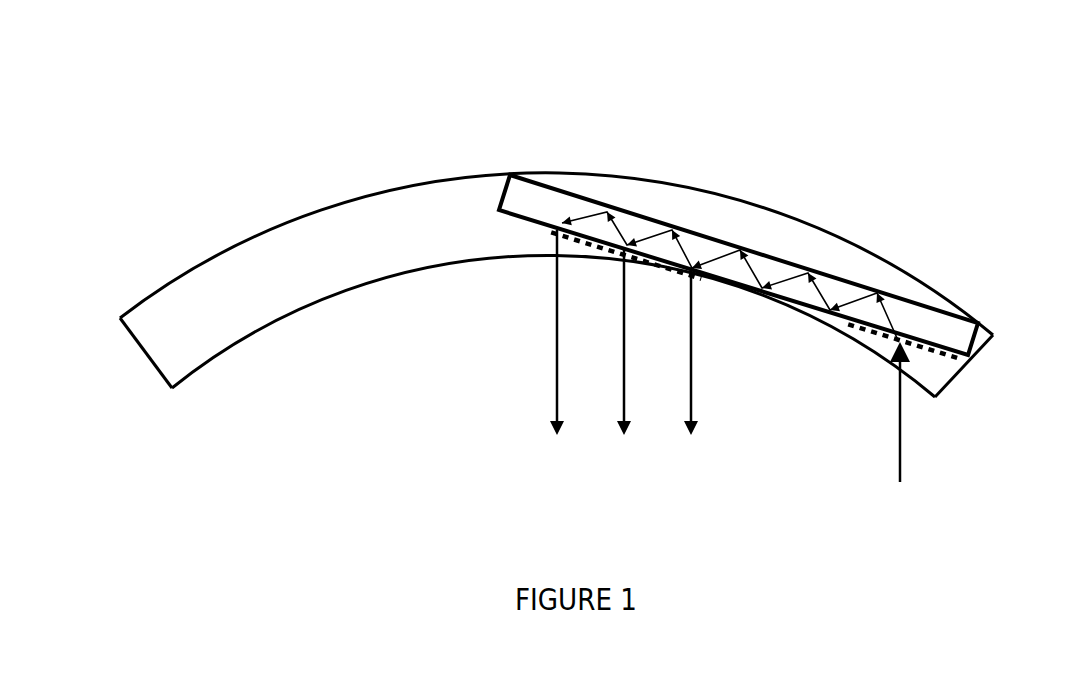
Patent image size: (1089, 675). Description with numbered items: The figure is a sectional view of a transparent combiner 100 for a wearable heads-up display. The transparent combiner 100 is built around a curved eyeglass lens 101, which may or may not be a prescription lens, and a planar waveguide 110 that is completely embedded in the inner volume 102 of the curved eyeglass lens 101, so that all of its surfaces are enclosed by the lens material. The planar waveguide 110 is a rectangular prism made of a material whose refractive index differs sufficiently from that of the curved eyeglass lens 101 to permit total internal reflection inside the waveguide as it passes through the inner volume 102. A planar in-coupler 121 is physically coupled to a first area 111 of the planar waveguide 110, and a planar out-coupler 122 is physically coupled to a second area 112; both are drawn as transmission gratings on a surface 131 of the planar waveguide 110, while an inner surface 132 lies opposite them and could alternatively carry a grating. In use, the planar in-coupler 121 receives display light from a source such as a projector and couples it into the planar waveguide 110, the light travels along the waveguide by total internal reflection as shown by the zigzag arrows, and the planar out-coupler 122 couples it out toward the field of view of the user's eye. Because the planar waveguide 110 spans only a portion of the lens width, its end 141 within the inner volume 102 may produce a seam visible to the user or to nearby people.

The transparent combiner 100 is at (136, 121).
The curved eyeglass lens 101 is at (137, 341).
The inner volume 102 is at (333, 257).
The planar waveguide 110 is at (975, 343).
The first area 111 is at (940, 355).
The second area 112 is at (593, 243).
The planar in-coupler 121 is at (922, 338).
The planar out-coupler 122 is at (582, 233).
The inner surface of frame 131 is at (526, 218).
The inner surface 132 is at (517, 212).
The end 141 is at (502, 192).